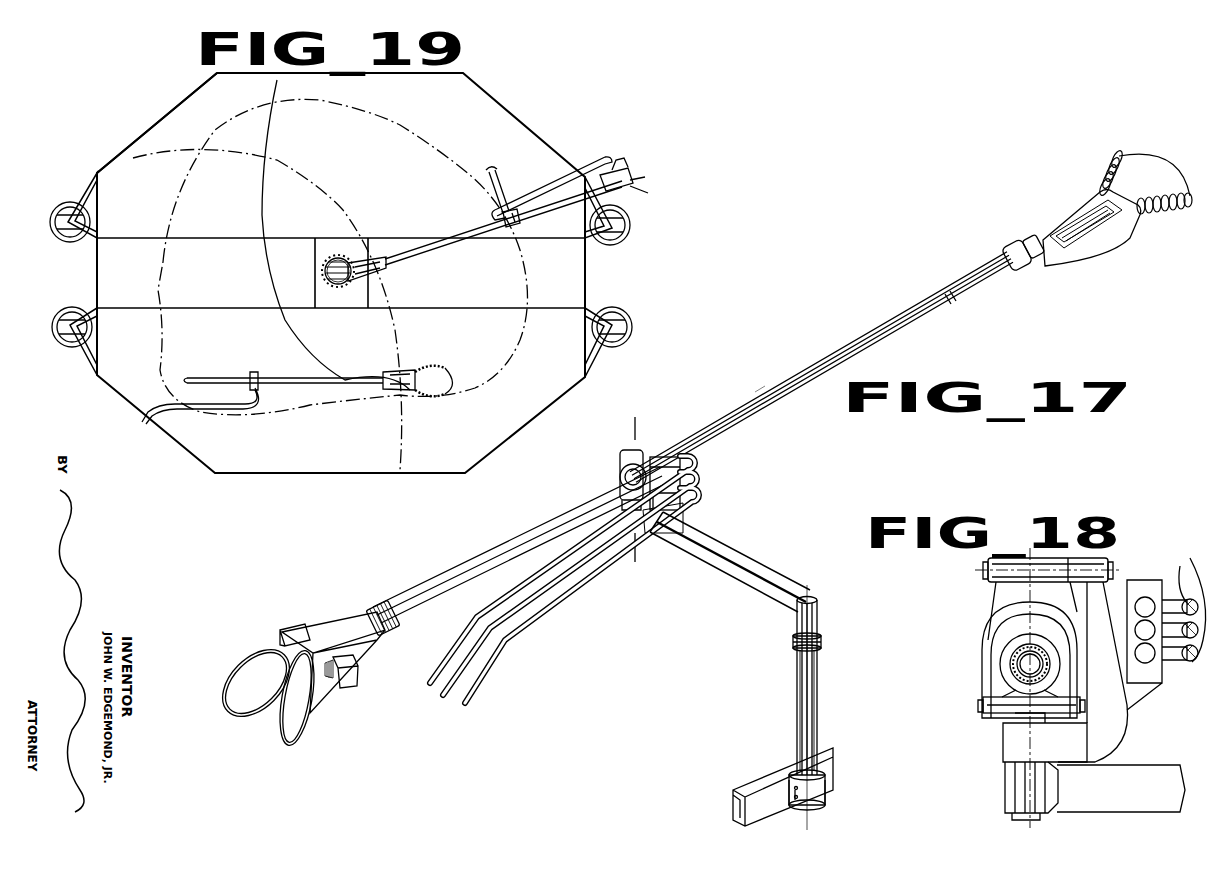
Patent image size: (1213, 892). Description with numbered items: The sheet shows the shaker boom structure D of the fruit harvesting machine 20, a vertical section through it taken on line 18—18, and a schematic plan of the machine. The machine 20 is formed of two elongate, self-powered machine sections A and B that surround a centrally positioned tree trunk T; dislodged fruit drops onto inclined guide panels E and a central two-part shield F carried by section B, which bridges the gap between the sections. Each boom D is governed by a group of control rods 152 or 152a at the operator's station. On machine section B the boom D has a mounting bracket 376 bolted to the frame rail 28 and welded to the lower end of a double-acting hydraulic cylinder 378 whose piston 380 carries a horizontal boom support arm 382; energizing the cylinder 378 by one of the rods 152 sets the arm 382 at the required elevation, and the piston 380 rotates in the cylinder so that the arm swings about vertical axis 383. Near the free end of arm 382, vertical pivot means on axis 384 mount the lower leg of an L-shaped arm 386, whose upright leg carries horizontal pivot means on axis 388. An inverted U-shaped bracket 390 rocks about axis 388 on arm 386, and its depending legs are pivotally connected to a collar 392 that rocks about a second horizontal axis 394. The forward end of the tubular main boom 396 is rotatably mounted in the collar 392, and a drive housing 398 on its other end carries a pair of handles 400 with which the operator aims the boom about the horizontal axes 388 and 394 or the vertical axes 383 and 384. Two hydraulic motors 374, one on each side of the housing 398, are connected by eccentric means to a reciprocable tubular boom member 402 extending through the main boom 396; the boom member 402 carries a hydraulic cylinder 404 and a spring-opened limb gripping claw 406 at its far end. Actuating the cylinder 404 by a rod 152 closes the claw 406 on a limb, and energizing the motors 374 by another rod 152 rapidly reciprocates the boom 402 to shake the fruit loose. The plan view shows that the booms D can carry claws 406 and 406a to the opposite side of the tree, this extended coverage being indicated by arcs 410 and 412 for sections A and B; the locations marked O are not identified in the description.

In FIG. 19, the fruit harvesting machine 20 is at (525, 110).
In FIG. 19, the control rods 152 is at (203, 408).
In FIG. 17, the control rods 152 is at (535, 592).
In FIG. 18, the control rods 152 is at (1178, 603).
In FIG. 19, the control rods 152a is at (606, 157).
In FIG. 19, the arc 410 is at (310, 178).
In FIG. 19, the arc 412 is at (262, 220).
In FIG. 19, the tree limb gripping claw 406 is at (440, 372).
In FIG. 17, the tree limb gripping claw 406 is at (1120, 168).
In FIG. 19, the limb gripping claw 406a is at (343, 288).
In FIG. 17, the hydraulic cylinder 404 is at (998, 266).
In FIG. 17, the reciprocable tubular boom member 402 is at (882, 335).
In FIG. 17, the L-shaped arm 386 is at (655, 455).
In FIG. 18, the L-shaped arm 386 is at (1115, 731).
In FIG. 18, the horizontal pivot axis 388 is at (985, 583).
In FIG. 17, the inverted U-shaped bracket 390 is at (619, 458).
In FIG. 18, the inverted U-shaped bracket 390 is at (1008, 598).
In FIG. 17, the collar 392 is at (620, 480).
In FIG. 18, the collar 392 is at (1010, 650).
In FIG. 18, the second horizontal axis 394 is at (1000, 715).
In FIG. 18, the vertical pivot axis 384 is at (1010, 737).
In FIG. 17, the boom support arm 382 is at (745, 588).
In FIG. 18, the boom support arm 382 is at (1121, 788).
In FIG. 17, the piston 380 is at (794, 632).
In FIG. 17, the vertical axis 383 is at (800, 660).
In FIG. 17, the double-acting hydraulic cylinder 378 is at (818, 738).
In FIG. 17, the mounting bracket 376 is at (793, 780).
In FIG. 17, the frame rail 28 is at (770, 778).
In FIG. 17, the tubular main boom 396 is at (483, 556).
In FIG. 17, the drive housing 398 is at (340, 615).
In FIG. 17, the hydraulic motors 374 is at (290, 630).
In FIG. 17, the handles 400 is at (275, 740).
In FIG. 17, the section line 18 is at (630, 430).
In FIG. 19, the machine section A is at (163, 112).
In FIG. 19, the machine section B is at (300, 478).
In FIG. 19, the shaker boom structure D is at (465, 233).
In FIG. 17, the shaker boom structure D is at (762, 385).
In FIG. 18, the shaker boom structure D is at (1010, 662).
In FIG. 19, the inclined guide panels E is at (394, 286).
In FIG. 19, the central two-part shield F is at (334, 271).
In FIG. 19, the opening O is at (55, 228).
In FIG. 19, the tree trunk T is at (325, 271).